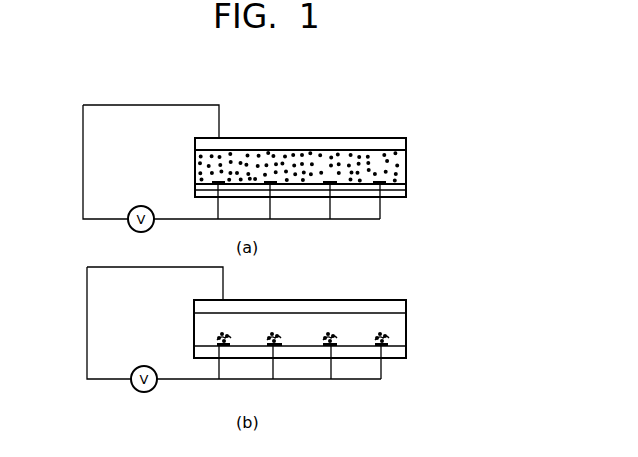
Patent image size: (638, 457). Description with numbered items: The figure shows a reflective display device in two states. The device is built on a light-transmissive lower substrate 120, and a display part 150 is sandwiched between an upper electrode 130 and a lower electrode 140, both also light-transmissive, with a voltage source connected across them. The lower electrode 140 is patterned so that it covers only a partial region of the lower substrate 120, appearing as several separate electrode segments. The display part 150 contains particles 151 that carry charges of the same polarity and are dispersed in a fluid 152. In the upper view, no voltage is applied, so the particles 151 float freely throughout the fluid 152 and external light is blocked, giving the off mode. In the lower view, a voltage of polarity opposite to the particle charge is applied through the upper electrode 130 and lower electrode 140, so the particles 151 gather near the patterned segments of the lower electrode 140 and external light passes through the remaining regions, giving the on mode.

The lower substrate 120 is at (383, 193).
The upper electrode 130 is at (369, 147).
The lower electrode 140 is at (387, 184).
The display part 150 is at (305, 173).
The particles 151 is at (398, 169).
The fluid 152 is at (403, 174).